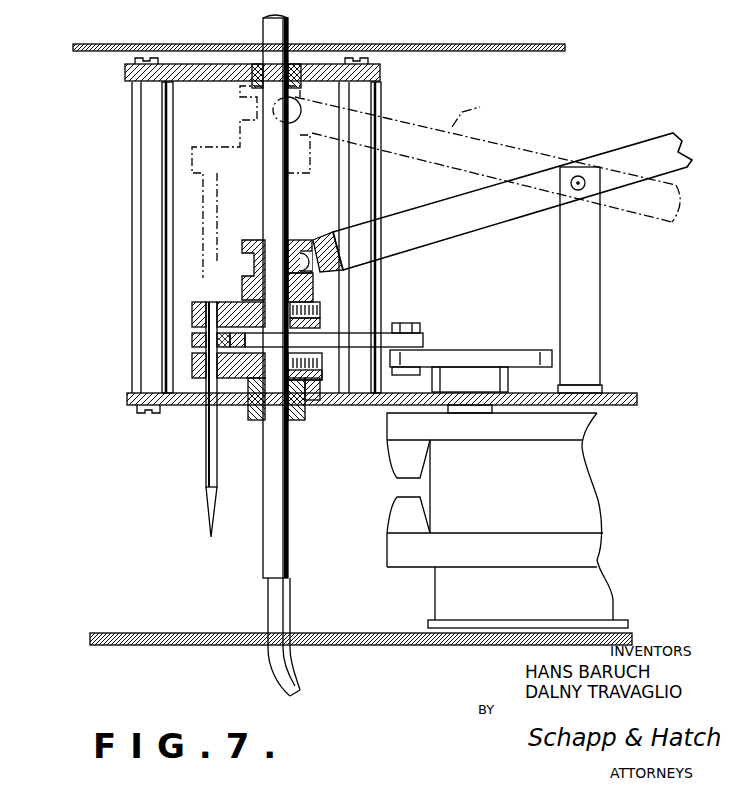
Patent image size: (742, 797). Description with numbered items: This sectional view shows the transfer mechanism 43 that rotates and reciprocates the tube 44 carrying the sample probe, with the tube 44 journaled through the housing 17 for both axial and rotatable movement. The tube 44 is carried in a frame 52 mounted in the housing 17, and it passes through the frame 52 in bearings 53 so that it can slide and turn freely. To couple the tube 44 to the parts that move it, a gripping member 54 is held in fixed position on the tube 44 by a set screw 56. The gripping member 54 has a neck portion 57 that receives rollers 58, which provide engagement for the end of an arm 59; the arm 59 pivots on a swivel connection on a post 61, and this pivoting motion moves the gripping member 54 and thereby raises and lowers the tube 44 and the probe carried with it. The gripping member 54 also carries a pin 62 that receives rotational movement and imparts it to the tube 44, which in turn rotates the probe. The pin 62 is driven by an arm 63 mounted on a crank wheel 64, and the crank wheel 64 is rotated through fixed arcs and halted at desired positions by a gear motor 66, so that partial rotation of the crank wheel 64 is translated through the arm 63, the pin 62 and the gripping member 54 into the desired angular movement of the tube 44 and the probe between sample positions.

The housing 17 is at (94, 44).
The transfer mechanism 43 is at (120, 274).
The tube 44 is at (272, 540).
The frame 52 is at (127, 407).
The bearings 53 is at (292, 62).
The gripping member 54 is at (237, 300).
The set screw 56 is at (318, 292).
The neck portion 57 is at (251, 242).
The rollers 58 is at (296, 240).
The arm 59 is at (447, 207).
The post 61 is at (595, 263).
The pin 62 is at (207, 488).
The arm 63 is at (385, 333).
The crank wheel 64 is at (443, 350).
The gear motor 66 is at (605, 500).